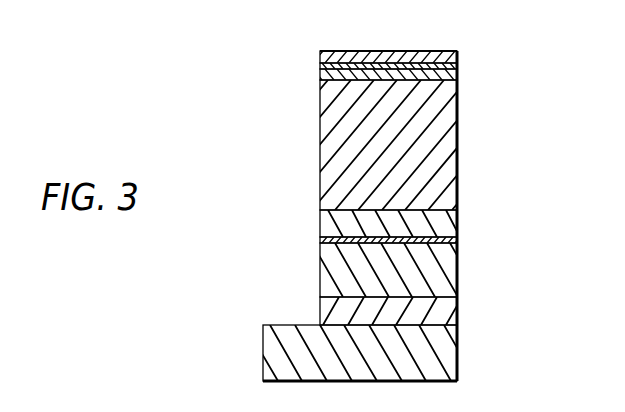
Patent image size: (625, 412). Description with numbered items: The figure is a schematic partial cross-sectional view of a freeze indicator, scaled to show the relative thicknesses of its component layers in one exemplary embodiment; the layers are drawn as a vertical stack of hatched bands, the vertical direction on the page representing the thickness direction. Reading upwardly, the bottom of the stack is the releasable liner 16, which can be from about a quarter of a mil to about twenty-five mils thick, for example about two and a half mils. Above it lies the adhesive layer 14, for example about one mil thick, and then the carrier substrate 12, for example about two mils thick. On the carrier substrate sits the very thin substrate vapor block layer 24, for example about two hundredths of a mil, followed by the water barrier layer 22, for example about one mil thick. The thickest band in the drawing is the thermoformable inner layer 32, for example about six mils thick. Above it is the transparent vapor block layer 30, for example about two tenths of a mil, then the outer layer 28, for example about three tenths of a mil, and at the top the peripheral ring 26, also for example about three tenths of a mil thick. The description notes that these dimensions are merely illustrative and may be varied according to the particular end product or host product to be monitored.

The carrier substrate 12 is at (452, 271).
The adhesive layer 14 is at (327, 303).
The releasable liner 16 is at (447, 363).
The water barrier layer 22 is at (452, 225).
The substrate vapor block layer 24 is at (322, 240).
The peripheral ring 26 is at (457, 58).
The outer layer 28 is at (320, 66).
The transparent vapor block layer 30 is at (455, 76).
The thermoformable inner layer 32 is at (332, 125).